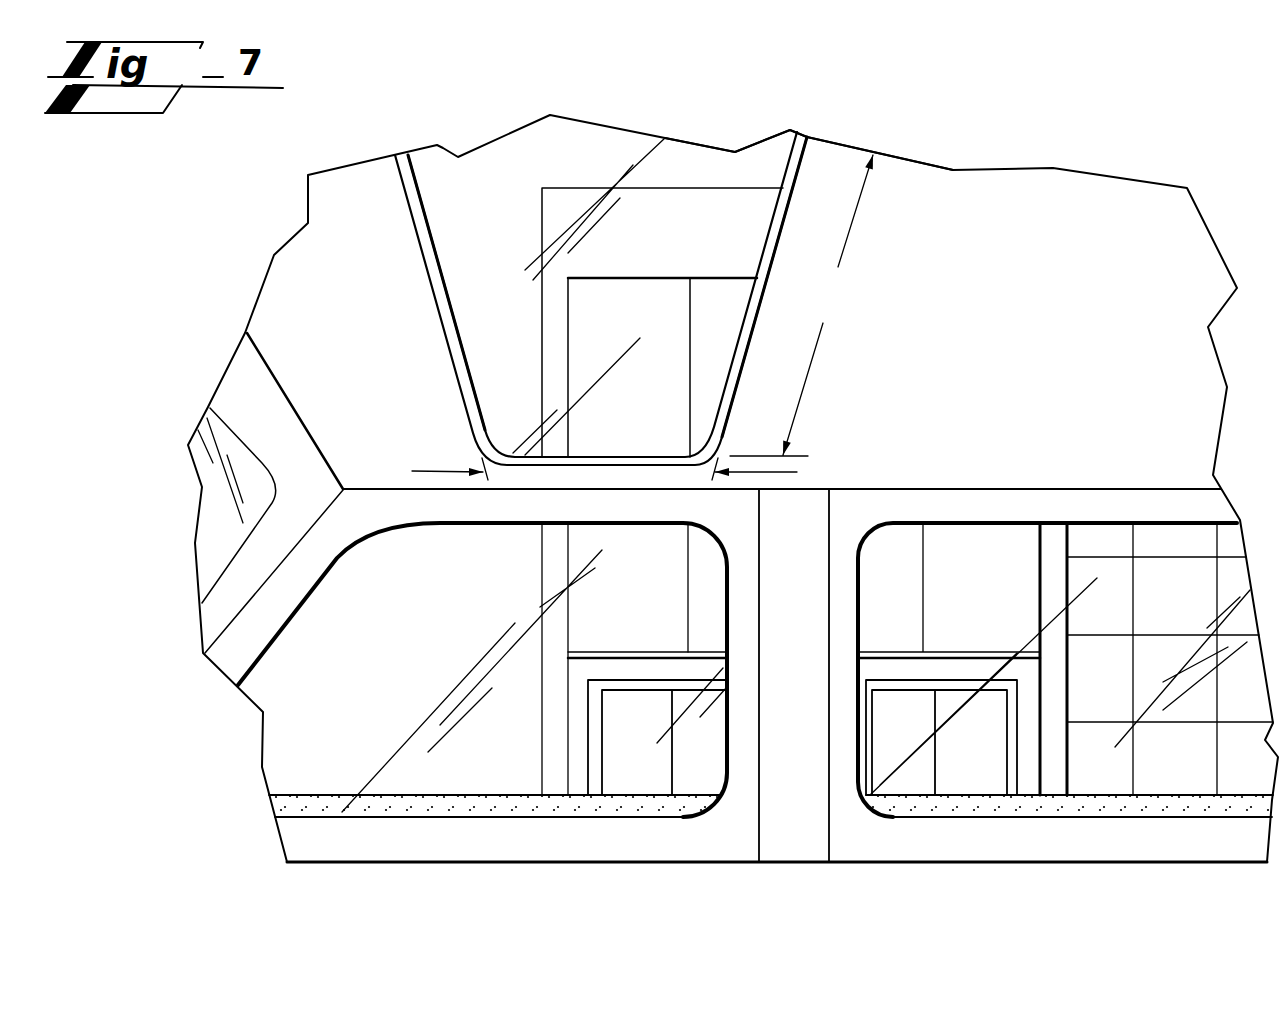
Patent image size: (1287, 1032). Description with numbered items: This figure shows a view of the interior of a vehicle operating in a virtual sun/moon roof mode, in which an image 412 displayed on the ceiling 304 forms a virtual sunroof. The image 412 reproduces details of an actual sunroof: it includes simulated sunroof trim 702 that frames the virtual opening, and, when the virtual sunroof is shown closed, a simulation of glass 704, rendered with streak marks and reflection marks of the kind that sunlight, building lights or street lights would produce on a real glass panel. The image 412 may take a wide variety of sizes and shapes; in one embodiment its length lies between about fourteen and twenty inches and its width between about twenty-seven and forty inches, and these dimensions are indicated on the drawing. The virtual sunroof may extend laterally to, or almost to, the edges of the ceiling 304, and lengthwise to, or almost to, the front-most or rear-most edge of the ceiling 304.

The ceiling 304 is at (1030, 362).
The image 412 is at (718, 125).
The simulated sunroof trim 702 is at (433, 297).
The simulation of glass 704 is at (523, 262).